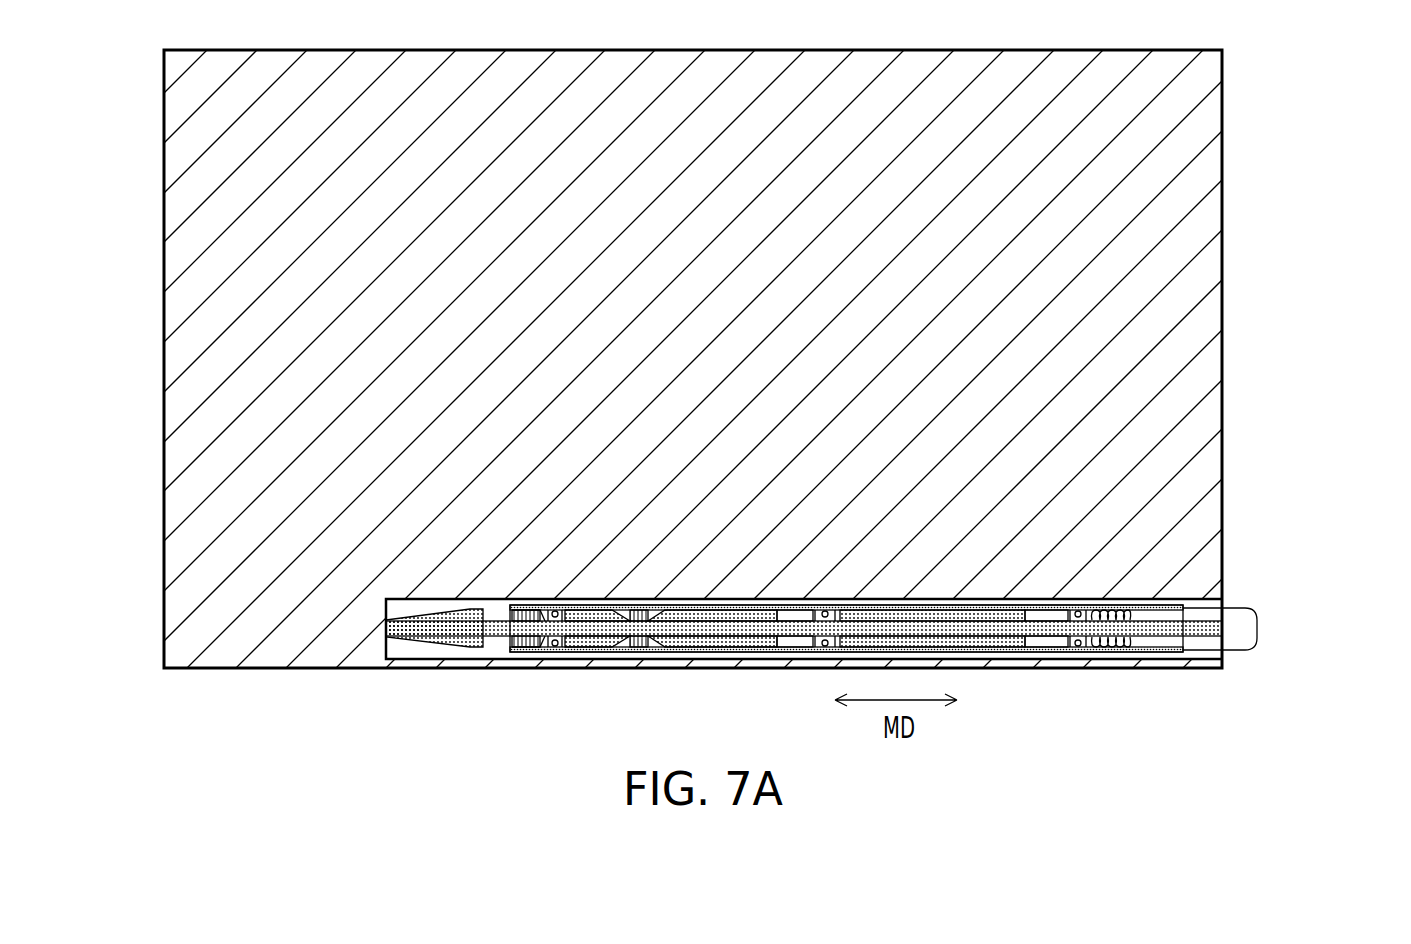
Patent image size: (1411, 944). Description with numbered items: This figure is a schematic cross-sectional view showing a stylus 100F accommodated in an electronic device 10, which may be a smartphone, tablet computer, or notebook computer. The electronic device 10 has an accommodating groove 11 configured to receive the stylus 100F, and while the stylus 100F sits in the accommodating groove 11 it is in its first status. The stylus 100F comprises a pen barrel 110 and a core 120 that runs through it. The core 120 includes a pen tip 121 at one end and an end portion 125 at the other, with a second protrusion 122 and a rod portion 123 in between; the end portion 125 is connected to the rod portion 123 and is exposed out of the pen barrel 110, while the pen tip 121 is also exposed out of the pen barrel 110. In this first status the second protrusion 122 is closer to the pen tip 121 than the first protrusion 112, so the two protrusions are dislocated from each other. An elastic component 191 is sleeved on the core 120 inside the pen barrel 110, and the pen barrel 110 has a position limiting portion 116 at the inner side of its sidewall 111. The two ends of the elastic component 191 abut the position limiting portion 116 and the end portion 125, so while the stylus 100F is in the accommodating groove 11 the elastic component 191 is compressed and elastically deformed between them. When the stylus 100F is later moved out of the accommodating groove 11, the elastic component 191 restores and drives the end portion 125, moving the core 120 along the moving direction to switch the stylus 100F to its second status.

The electronic device 10 is at (1047, 68).
The accommodating groove 11 is at (1185, 598).
The stylus 100F is at (882, 653).
The pen barrel 110 is at (846, 653).
The sidewall 111 is at (800, 608).
The first protrusion 112 is at (643, 608).
The position limiting portion 116 is at (1079, 648).
The core 120 is at (1050, 643).
The pen tip 121 is at (437, 630).
The second protrusion 122 is at (605, 640).
The rod portion 123 is at (627, 640).
The end portion 125 is at (1240, 620).
The elastic component 191 is at (1108, 640).